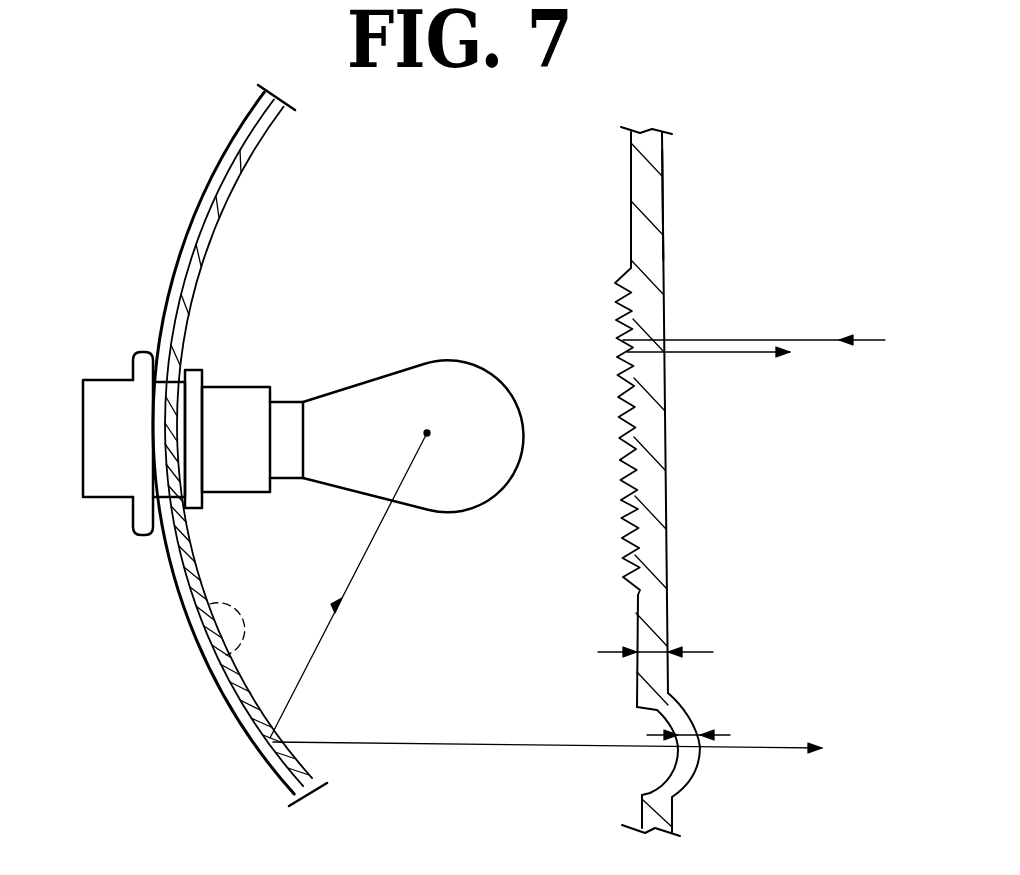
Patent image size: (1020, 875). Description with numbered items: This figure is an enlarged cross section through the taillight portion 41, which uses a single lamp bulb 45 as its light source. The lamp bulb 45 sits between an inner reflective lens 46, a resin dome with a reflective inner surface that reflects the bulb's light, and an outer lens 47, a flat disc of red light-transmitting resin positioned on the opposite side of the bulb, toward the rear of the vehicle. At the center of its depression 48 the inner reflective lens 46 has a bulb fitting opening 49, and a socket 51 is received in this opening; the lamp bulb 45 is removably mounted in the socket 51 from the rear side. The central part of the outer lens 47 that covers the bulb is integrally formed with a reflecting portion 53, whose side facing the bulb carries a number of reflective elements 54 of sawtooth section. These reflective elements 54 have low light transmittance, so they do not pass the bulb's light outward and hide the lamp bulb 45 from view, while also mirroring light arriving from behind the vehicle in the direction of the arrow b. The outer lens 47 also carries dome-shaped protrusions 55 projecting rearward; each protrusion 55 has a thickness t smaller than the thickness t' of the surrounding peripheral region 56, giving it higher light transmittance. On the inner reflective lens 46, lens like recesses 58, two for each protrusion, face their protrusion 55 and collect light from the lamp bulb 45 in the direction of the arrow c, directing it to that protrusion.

The taillight portion 41 is at (808, 167).
The lamp bulb 45 is at (407, 366).
The inner reflective lens 46 is at (263, 147).
The outer lens 47 is at (663, 198).
The depression 48 is at (193, 368).
The bulb fitting opening 49 is at (160, 384).
The socket 51 is at (115, 498).
The reflecting portion 53 is at (666, 430).
The reflective elements 54 is at (623, 477).
The protrusions 55 is at (693, 763).
The peripheral region 56 is at (663, 212).
The lens like recesses 58 is at (212, 678).
The arrow b is at (733, 338).
The arrow C c is at (368, 550).
The thickness t is at (698, 704).
The thickness t' is at (655, 642).